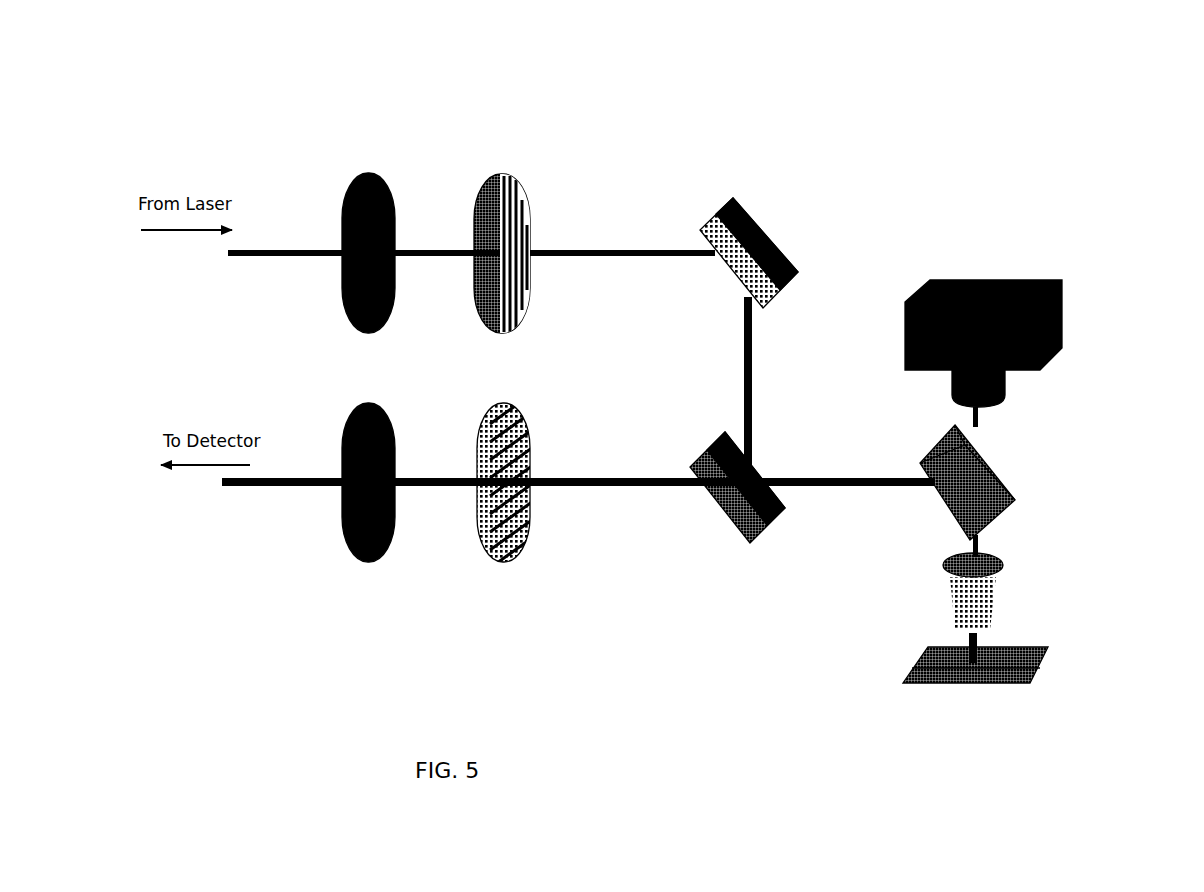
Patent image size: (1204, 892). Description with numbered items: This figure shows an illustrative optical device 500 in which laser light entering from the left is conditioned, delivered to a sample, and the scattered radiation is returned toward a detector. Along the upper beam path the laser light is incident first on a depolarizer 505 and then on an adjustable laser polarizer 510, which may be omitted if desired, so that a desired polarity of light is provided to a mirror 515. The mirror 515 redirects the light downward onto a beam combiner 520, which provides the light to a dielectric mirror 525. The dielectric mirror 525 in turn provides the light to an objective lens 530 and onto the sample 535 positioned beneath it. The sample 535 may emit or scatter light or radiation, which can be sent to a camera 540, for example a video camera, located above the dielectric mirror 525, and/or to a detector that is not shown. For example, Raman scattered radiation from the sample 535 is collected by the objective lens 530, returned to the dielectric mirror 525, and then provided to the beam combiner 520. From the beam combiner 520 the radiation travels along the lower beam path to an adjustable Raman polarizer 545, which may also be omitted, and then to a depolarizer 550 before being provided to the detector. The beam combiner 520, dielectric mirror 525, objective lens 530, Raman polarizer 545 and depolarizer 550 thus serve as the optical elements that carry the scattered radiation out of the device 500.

The device 500 is at (192, 575).
The depolarizer 505 is at (375, 152).
The adjustable laser polarizer 510 is at (508, 152).
The mirror 515 is at (785, 152).
The beam combiner 520 is at (703, 586).
The dielectric mirror 525 is at (1032, 453).
The objective lens 530 is at (1034, 578).
The sample 535 is at (975, 692).
The camera 540 is at (997, 240).
The adjustable Raman polarizer 545 is at (481, 588).
The depolarizer 550 is at (350, 588).